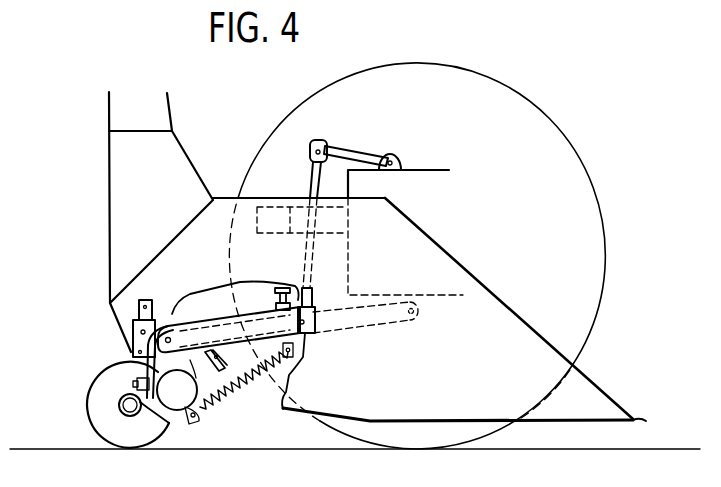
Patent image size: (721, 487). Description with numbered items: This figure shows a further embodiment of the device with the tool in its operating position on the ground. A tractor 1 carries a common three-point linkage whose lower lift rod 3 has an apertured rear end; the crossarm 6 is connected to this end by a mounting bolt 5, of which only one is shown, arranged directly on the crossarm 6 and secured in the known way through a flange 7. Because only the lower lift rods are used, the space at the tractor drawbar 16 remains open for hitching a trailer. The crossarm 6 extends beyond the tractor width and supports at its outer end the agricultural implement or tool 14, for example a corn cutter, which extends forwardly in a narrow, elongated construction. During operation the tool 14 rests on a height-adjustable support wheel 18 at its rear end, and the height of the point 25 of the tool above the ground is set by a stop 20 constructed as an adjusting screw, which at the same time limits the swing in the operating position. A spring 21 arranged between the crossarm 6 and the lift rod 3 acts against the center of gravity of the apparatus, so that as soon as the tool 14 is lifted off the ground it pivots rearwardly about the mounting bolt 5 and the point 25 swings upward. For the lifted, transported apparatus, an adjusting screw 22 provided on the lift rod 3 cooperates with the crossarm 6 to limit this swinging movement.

The tractor 1 is at (433, 170).
The lower lift rod 3 is at (210, 320).
The mounting bolt 5 is at (158, 328).
The crossarm 6 is at (160, 408).
The flange 7 is at (193, 366).
The agricultural implement or tool 14 is at (547, 421).
The tractor drawbar 16 is at (276, 207).
The support wheel 18 is at (97, 411).
The stop 20 is at (121, 397).
The spring 21 is at (250, 355).
The adjusting screw 22 is at (232, 388).
The point of the tool 25 is at (640, 421).